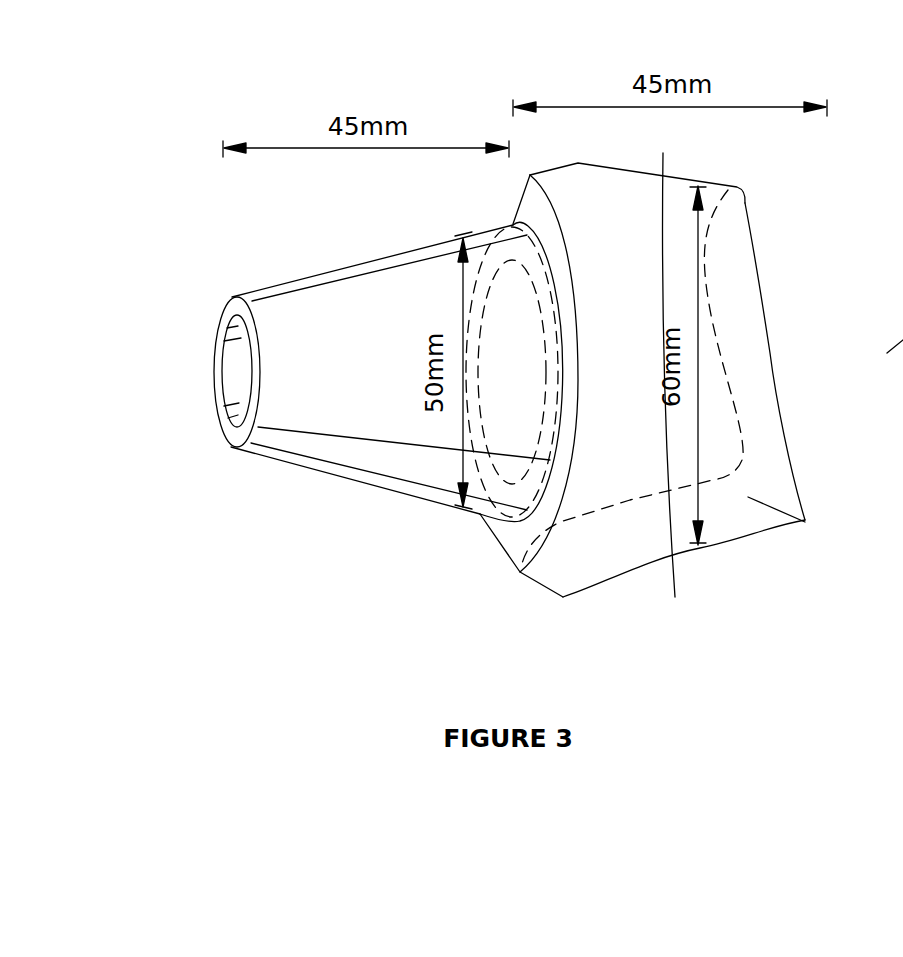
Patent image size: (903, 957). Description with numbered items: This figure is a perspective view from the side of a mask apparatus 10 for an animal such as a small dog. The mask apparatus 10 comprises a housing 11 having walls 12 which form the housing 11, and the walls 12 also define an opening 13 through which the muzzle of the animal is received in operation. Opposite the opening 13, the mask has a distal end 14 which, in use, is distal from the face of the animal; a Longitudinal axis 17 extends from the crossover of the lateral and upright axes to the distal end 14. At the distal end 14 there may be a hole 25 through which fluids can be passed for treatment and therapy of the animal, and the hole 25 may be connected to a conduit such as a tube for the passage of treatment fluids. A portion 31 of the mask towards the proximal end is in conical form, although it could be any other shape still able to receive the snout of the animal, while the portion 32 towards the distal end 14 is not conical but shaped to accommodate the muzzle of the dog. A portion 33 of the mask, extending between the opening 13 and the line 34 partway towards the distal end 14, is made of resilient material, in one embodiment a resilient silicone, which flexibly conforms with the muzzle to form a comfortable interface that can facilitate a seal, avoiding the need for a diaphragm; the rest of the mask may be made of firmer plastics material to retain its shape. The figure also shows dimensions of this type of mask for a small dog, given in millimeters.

The mask apparatus 10 is at (365, 512).
The housing 11 is at (472, 512).
The walls 12 is at (750, 497).
The opening 13 is at (757, 400).
The distal end 14 is at (232, 447).
The Longitudinal axis 17 is at (902, 300).
The hole 25 is at (234, 387).
The portion 31 is at (330, 268).
The portion 32 is at (313, 475).
The portion 33 is at (727, 547).
The line 34 is at (677, 580).